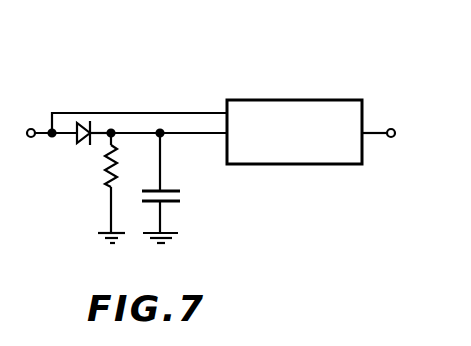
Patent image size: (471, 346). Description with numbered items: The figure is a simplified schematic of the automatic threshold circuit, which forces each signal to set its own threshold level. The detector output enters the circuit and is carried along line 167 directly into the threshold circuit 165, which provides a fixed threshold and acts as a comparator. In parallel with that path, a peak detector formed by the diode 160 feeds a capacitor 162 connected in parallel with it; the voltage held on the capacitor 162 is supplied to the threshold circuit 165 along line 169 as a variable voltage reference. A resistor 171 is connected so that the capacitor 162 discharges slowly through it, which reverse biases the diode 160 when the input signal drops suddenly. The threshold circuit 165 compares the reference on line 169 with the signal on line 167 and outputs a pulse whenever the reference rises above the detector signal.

The diode 160 is at (80, 125).
The capacitor 162 is at (181, 195).
The threshold circuit 165 is at (308, 84).
The line 167 is at (193, 112).
The line 169 is at (176, 137).
The resistor 171 is at (107, 178).